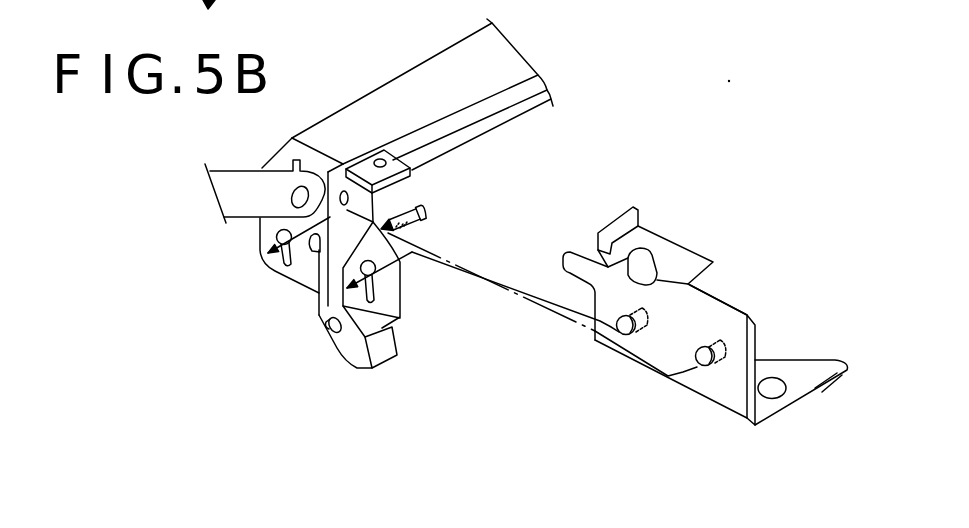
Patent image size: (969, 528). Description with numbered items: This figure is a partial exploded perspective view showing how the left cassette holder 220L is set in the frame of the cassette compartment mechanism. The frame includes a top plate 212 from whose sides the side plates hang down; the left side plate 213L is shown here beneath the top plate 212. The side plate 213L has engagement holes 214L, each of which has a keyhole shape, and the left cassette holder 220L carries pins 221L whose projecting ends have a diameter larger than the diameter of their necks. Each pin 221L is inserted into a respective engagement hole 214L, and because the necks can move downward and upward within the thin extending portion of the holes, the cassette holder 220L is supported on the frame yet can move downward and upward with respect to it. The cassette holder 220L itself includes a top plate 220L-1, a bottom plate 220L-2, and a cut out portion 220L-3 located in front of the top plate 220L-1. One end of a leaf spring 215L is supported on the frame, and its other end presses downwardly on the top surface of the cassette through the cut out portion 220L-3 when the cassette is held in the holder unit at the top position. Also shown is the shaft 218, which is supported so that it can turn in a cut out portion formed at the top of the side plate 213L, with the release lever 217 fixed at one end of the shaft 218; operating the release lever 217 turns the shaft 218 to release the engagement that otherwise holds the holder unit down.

The top plate 212 is at (333, 128).
The side plate 213L is at (305, 273).
The engagement hole 214L is at (277, 228).
The leaf spring 215L is at (425, 212).
The release lever 217 is at (348, 347).
The shaft 218 is at (513, 110).
The left cassette holder 220L is at (725, 329).
The top plate 220L-1 is at (695, 265).
The bottom plate 220L-2 is at (775, 407).
The cut out portion 220L-3 is at (720, 286).
The pin 221L is at (622, 334).